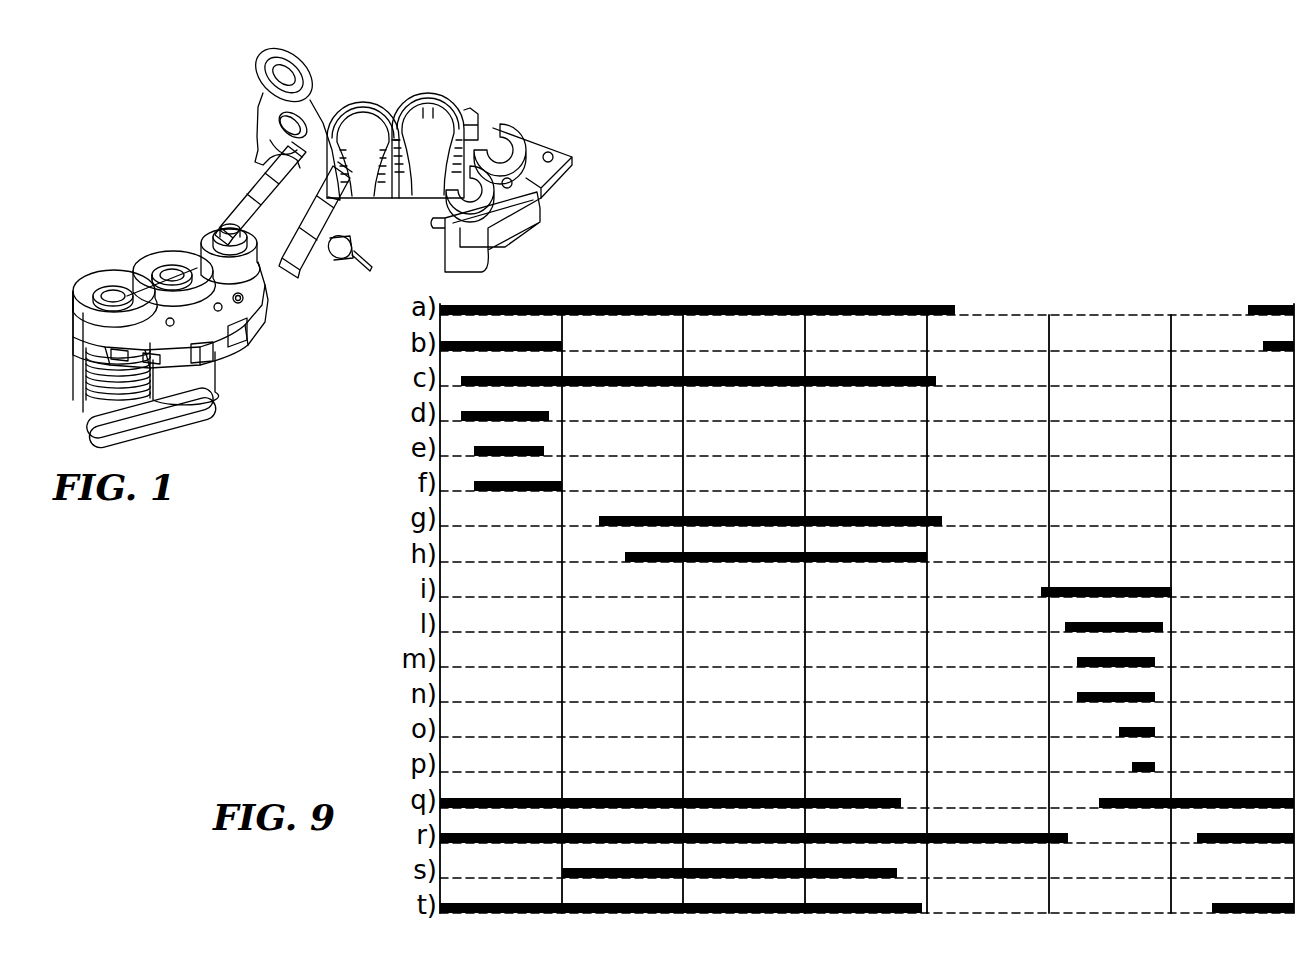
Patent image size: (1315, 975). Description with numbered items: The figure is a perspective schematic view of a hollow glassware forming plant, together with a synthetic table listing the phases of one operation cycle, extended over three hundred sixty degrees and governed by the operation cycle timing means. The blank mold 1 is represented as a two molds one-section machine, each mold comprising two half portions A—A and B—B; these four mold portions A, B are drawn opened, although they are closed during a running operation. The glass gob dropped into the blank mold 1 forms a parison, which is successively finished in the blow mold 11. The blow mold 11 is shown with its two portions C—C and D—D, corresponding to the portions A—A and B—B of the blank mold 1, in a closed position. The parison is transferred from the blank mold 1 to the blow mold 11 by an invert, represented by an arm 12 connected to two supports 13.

The blank mold 1 is at (440, 88).
The blow mold 11 is at (118, 256).
The arm 12 is at (272, 120).
The supports 13 is at (258, 238).
The mold half portion A is at (410, 102).
The mold half portion B is at (333, 105).
The blow mold portion C is at (103, 312).
The blow mold portion D is at (158, 258).